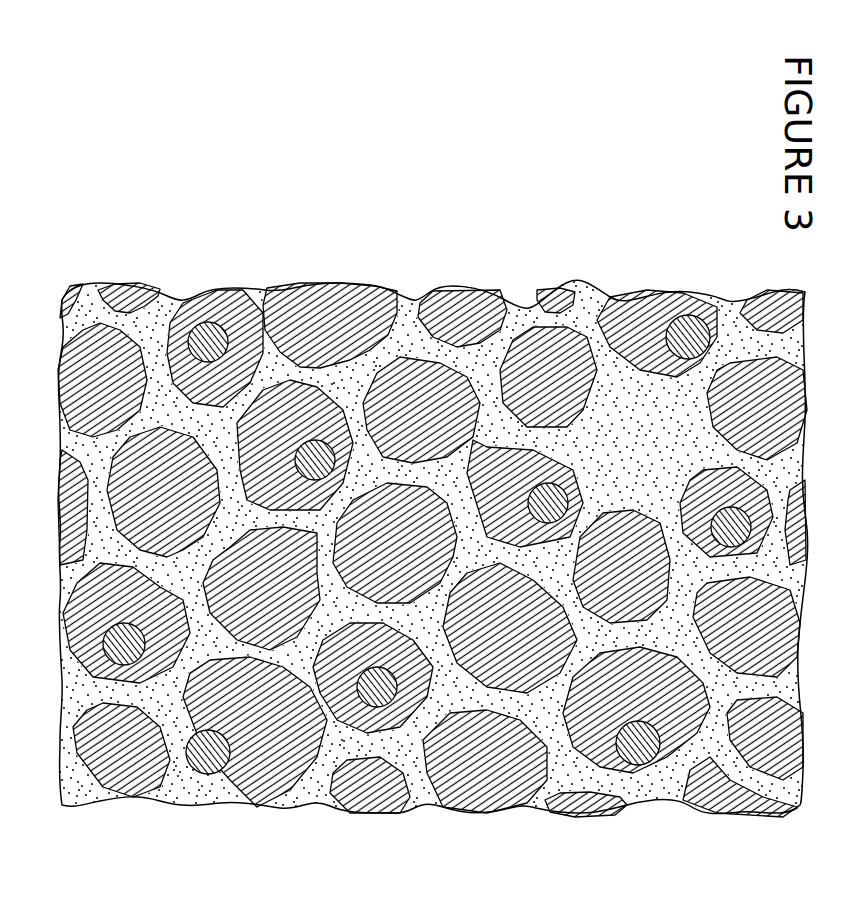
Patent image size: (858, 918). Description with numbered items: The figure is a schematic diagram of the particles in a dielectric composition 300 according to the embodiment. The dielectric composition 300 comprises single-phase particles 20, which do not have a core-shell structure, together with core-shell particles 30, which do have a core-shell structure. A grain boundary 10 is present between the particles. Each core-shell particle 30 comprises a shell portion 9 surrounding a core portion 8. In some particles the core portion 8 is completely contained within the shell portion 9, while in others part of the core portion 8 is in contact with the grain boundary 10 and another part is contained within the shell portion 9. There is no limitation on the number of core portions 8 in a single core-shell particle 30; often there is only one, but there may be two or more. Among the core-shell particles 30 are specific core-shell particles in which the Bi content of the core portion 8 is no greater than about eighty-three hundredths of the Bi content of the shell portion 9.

The dielectric composition 300 is at (603, 276).
The grain boundary 10 is at (377, 367).
The single-phase particles 20 is at (482, 387).
The core-shell particles 30 is at (336, 385).
The shell portion 9 is at (273, 415).
The core portion 8 is at (317, 442).